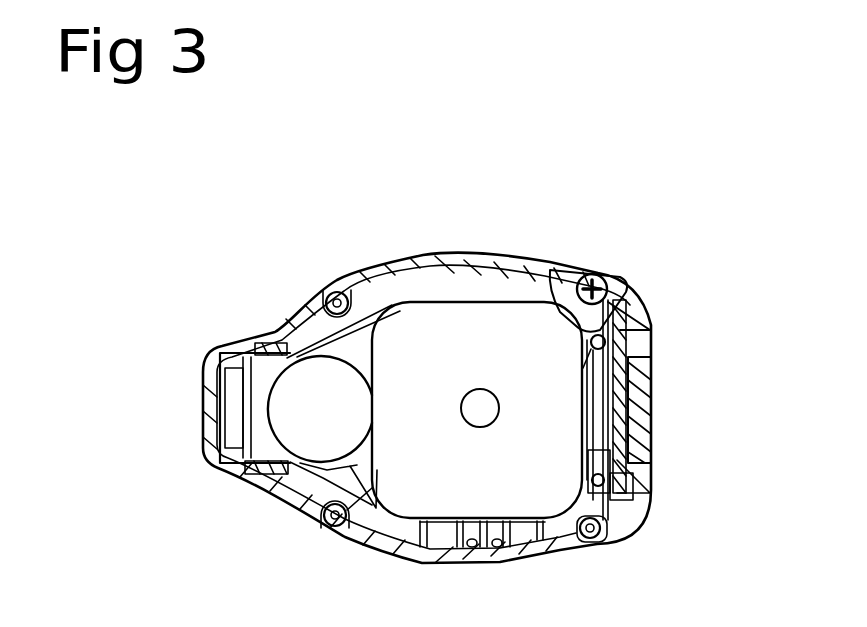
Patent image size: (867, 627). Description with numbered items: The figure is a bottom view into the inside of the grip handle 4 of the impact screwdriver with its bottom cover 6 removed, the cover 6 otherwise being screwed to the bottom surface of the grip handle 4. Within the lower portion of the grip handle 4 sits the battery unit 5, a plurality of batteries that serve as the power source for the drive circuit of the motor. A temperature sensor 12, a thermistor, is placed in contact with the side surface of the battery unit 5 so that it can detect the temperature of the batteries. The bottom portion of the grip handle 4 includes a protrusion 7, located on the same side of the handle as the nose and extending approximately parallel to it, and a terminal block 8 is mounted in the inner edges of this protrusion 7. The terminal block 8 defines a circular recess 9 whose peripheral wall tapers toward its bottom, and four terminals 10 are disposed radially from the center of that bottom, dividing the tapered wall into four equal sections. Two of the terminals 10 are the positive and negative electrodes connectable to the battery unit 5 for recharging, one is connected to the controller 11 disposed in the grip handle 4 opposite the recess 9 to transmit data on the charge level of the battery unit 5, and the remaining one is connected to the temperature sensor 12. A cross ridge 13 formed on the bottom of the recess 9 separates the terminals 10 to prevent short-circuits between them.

The grip handle 4 is at (422, 255).
The battery unit 5 is at (490, 337).
The cover 6 is at (567, 285).
The protrusion 7 is at (650, 295).
The terminal block 8 is at (620, 300).
The circular recess 9 is at (648, 403).
The terminals 10 is at (593, 522).
The controller 11 is at (260, 373).
The temperature sensor 12 is at (337, 480).
The cross ridge 13 is at (628, 428).